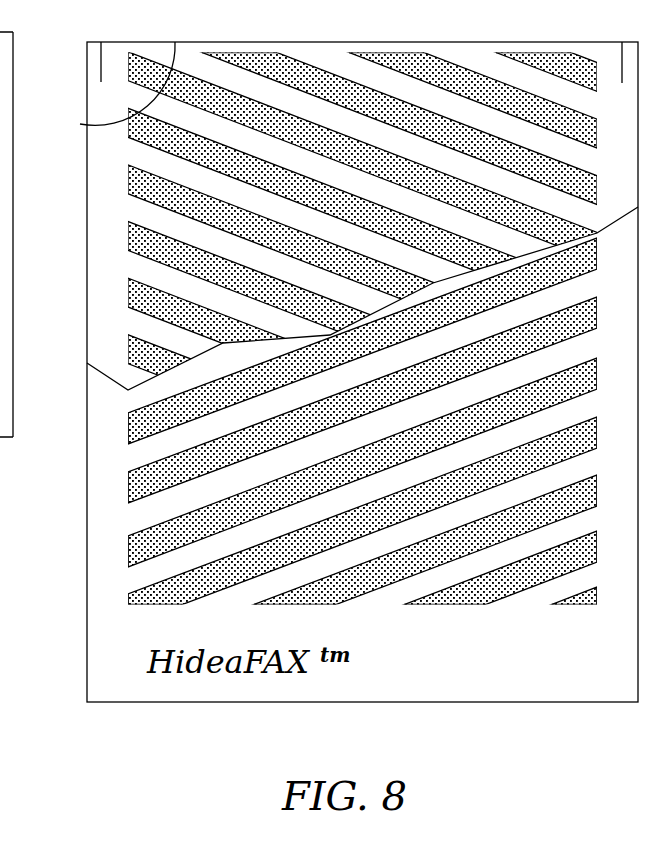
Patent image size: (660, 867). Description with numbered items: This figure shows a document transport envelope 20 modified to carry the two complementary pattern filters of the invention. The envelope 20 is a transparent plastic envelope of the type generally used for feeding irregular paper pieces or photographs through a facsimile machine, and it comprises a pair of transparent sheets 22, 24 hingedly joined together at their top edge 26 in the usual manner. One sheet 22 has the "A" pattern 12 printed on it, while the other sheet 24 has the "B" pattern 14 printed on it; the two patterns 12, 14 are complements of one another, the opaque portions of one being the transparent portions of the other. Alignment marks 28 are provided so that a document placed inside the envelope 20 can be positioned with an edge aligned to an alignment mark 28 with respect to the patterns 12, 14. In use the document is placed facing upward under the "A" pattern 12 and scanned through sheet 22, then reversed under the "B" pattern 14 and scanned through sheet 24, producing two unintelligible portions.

The "A" pattern 12 is at (322, 518).
The "B" pattern 14 is at (333, 276).
The transparent transport envelope 20 is at (68, 481).
The transparent sheet 22 is at (103, 254).
The transparent sheet 24 is at (103, 398).
The top edge 26 is at (80, 122).
The alignment marks 28 is at (100, 62).